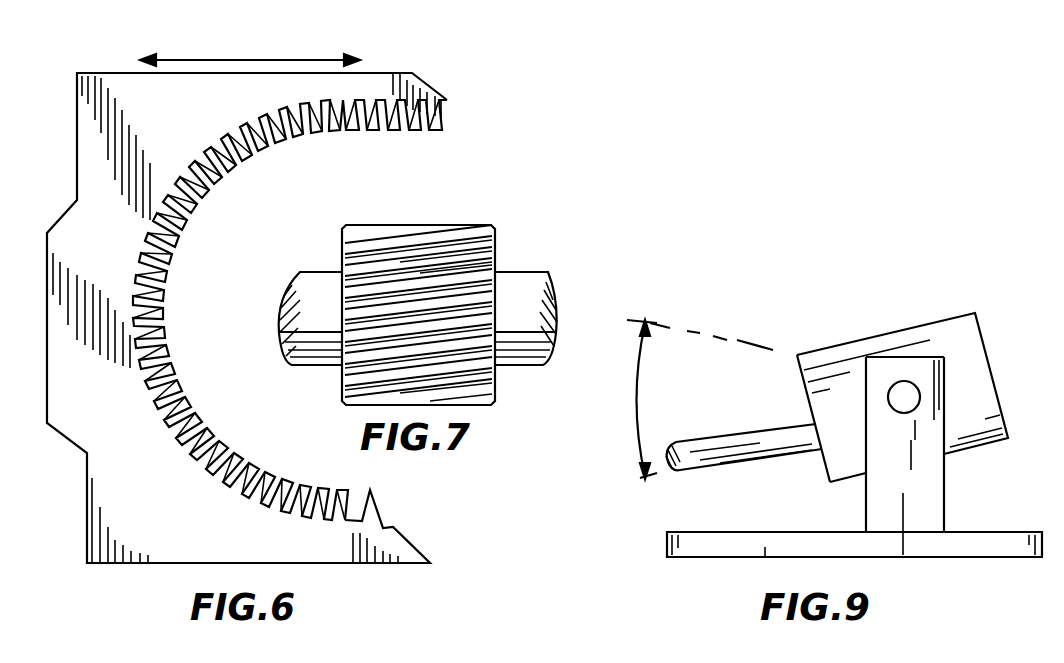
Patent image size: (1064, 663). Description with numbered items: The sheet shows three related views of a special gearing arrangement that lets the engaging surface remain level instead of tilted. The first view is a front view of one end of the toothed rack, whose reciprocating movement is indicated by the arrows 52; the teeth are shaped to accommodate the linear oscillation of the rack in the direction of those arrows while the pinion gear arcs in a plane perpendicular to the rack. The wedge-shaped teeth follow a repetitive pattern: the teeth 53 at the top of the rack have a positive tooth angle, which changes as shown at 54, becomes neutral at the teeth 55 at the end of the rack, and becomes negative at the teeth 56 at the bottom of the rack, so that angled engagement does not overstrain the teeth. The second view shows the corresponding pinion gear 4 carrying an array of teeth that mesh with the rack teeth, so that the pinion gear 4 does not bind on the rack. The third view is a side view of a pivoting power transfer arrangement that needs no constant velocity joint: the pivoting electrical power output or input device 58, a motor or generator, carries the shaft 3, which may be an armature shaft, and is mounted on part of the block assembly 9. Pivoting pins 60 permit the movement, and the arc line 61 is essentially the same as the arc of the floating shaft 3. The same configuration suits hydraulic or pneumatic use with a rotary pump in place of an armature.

In FIG. 6, the reciprocating movement of the rack 52 is at (250, 42).
In FIG. 6, the teeth at the top of the rack 53 is at (440, 127).
In FIG. 7, the teeth at the top of the rack 53 is at (417, 227).
In FIG. 6, the changing tooth angle 54 is at (307, 148).
In FIG. 7, the changing tooth angle 54 is at (483, 260).
In FIG. 6, the teeth at the end of the rack 55 is at (160, 298).
In FIG. 7, the teeth at the end of the rack 55 is at (492, 388).
In FIG. 6, the teeth at the bottom of the rack 56 is at (312, 484).
In FIG. 7, the pinion gear 4 is at (340, 255).
In FIG. 9, the pivoting electrical power output or input device 58 is at (960, 334).
In FIG. 9, the pivoting pins 60 is at (892, 403).
In FIG. 9, the shaft 3 is at (726, 442).
In FIG. 9, the block assembly 9 is at (797, 548).
In FIG. 9, the arc line 61 is at (640, 360).